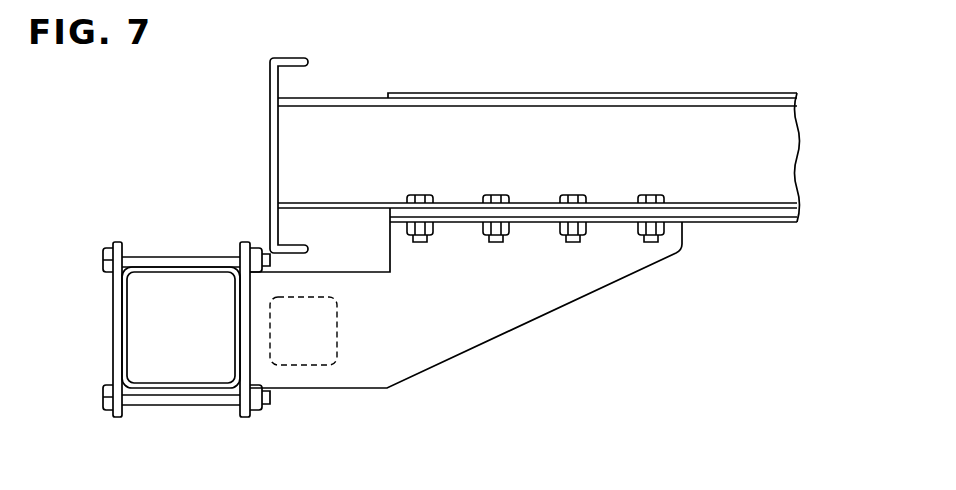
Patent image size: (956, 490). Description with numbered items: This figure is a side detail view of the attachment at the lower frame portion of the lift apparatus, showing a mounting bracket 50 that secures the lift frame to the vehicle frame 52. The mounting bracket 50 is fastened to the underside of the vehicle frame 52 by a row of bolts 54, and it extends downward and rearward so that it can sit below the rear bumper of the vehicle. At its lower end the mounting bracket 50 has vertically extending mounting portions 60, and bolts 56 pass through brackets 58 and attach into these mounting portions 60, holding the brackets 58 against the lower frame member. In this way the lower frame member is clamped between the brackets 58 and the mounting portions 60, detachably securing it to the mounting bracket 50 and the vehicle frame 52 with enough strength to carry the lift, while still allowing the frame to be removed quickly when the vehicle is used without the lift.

The mounting bracket 50 is at (450, 342).
The vehicle frame 52 is at (519, 125).
The bolts 54 is at (422, 243).
The bolts 56 is at (155, 257).
The brackets 58 is at (120, 243).
The vertically extending mounting portions 60 is at (244, 395).